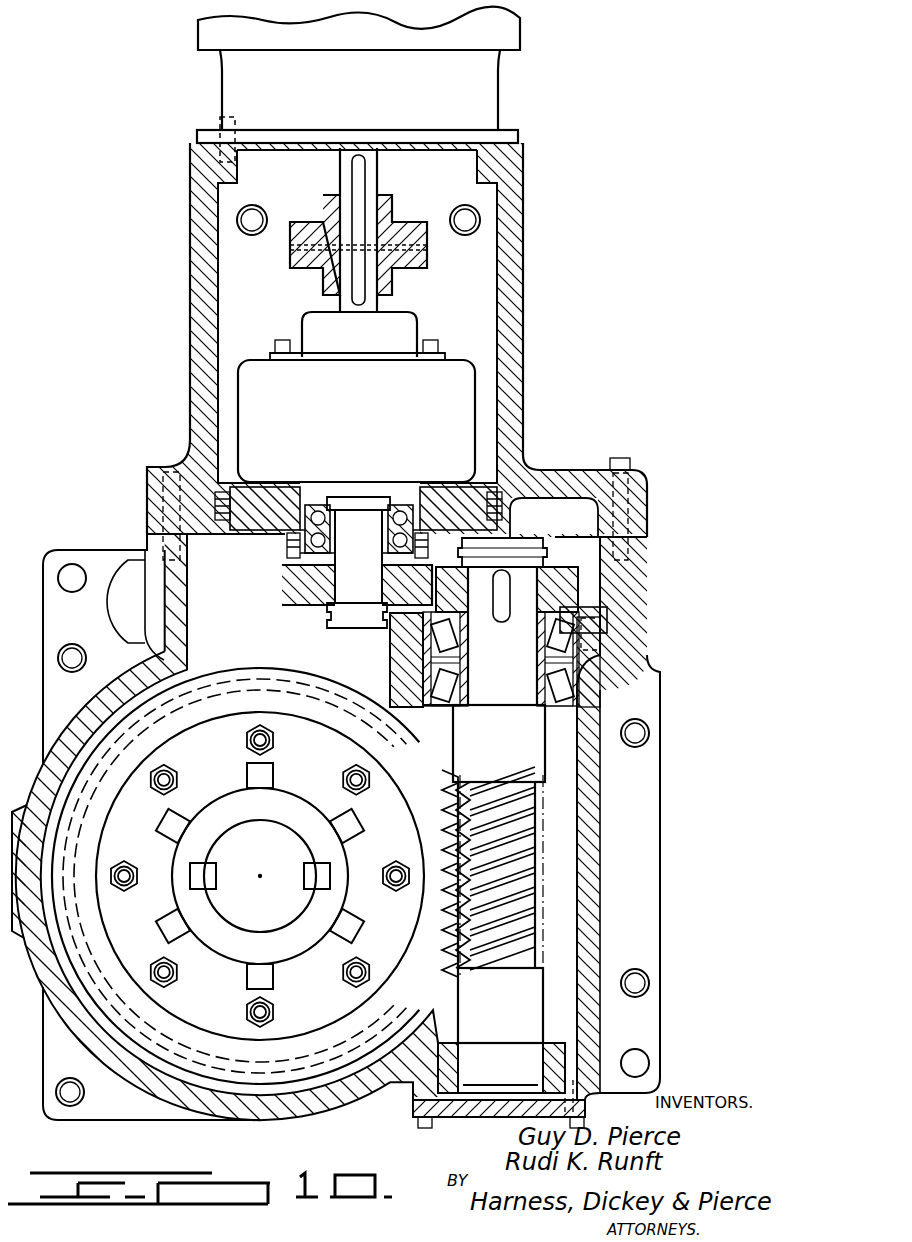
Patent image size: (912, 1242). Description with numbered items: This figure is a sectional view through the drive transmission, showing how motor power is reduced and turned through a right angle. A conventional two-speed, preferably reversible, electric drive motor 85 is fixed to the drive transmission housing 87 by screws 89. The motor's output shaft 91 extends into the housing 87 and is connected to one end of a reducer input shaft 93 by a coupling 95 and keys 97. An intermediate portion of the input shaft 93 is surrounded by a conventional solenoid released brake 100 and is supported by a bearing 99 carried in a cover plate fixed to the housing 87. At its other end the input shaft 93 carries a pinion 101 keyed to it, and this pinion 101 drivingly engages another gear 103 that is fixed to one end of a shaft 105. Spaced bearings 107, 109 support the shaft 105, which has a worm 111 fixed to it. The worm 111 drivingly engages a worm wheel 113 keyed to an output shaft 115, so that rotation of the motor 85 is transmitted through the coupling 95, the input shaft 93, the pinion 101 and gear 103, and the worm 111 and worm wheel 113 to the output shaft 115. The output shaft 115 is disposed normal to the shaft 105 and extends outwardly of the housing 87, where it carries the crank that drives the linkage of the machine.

The electric drive motor 85 is at (508, 92).
The drive transmission housing 87 is at (560, 466).
The screws 89 is at (217, 124).
The output shaft 91 is at (378, 176).
The reducer input shaft 93 is at (383, 305).
The coupling 95 is at (397, 227).
The keys 97 is at (353, 270).
The bearing 99 is at (305, 528).
The solenoid released brake 100 is at (468, 356).
The pinion 101 is at (290, 593).
The gear 103 is at (567, 593).
The shaft 105 is at (547, 737).
The bearing 107 is at (580, 676).
The bearing 109 is at (553, 1063).
The worm 111 is at (530, 887).
The worm wheel 113 is at (423, 757).
The output shaft 115 is at (286, 912).